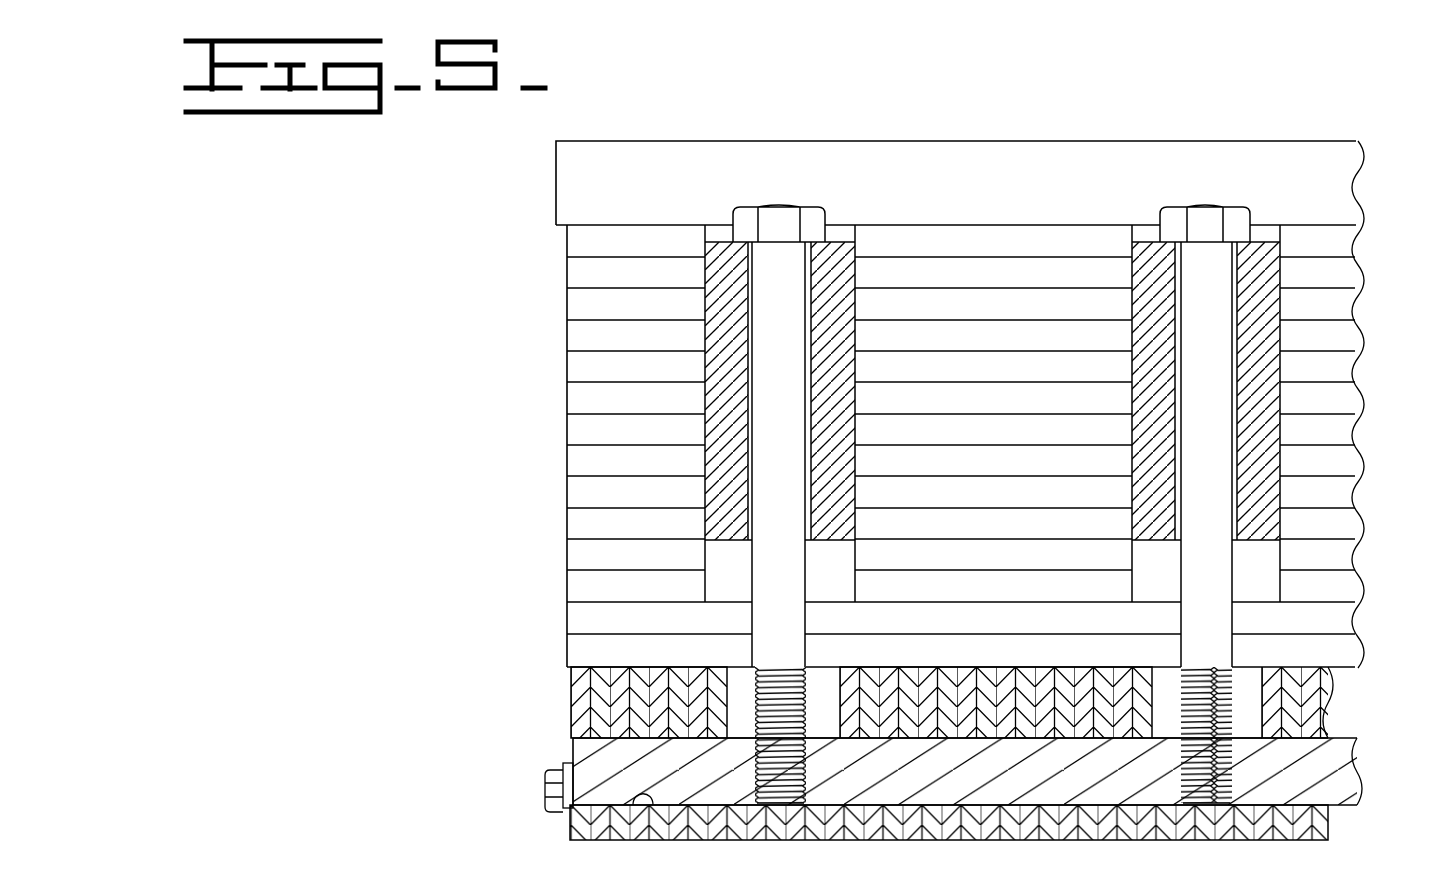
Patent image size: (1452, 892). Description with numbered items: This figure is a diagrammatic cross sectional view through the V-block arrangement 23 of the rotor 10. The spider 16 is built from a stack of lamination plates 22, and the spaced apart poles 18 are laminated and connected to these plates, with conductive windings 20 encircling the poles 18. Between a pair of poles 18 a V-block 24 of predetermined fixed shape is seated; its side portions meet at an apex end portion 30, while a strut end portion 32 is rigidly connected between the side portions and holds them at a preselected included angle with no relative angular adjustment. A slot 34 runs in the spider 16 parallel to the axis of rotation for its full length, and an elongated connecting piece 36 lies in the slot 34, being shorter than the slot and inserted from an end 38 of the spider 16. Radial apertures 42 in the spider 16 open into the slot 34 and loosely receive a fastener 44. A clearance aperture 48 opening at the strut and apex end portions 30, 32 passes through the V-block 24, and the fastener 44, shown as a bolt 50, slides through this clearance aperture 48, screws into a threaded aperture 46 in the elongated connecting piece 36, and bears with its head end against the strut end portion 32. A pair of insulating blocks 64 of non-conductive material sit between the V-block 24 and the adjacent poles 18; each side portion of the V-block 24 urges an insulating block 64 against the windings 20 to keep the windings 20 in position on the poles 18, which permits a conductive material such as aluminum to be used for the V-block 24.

The rotor 10 is at (385, 253).
The spider 16 is at (1332, 815).
The poles 18 is at (890, 197).
The conductive windings 20 is at (971, 386).
The lamination plates 22 is at (910, 830).
The V-block arrangement 23 is at (1127, 268).
The V-block 24 is at (705, 365).
The apex end portion 30 is at (713, 488).
The strut end portion 32 is at (710, 273).
The slot 34 is at (653, 806).
The elongated connecting piece 36 is at (1340, 777).
The end of the spider 38 is at (571, 707).
The radial apertures 42 is at (725, 686).
The fastener 44 is at (968, 469).
The threaded apertures 46 is at (777, 792).
The clearance aperture 48 is at (747, 318).
The bolt 50 is at (798, 205).
The insulating blocks 64 is at (720, 555).